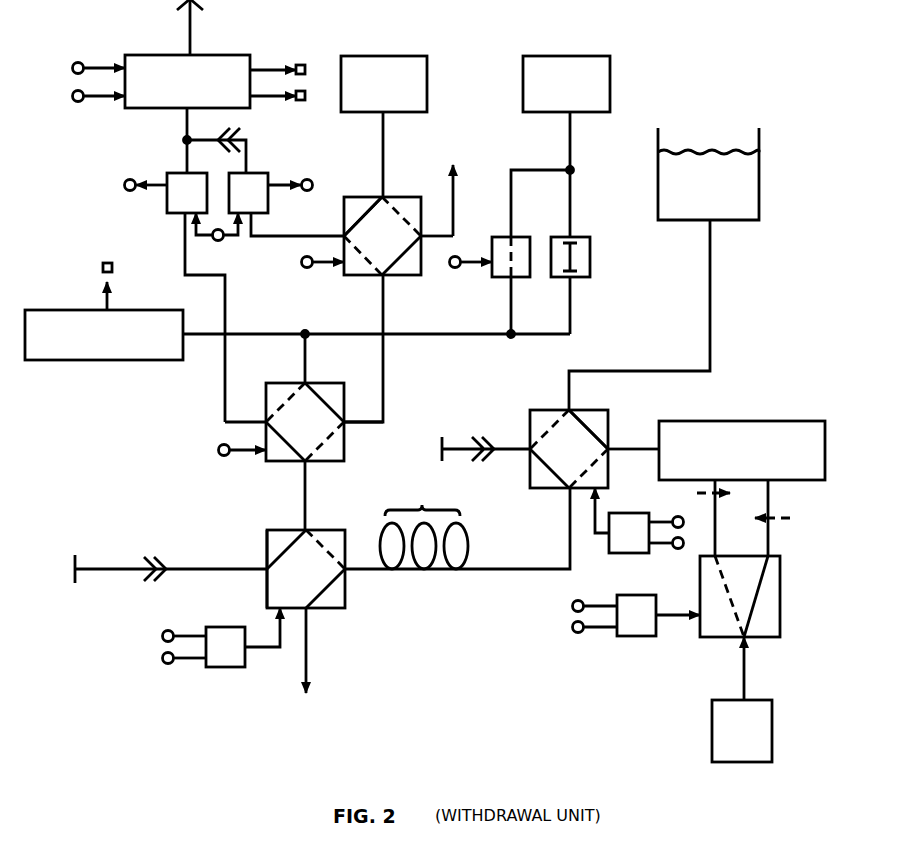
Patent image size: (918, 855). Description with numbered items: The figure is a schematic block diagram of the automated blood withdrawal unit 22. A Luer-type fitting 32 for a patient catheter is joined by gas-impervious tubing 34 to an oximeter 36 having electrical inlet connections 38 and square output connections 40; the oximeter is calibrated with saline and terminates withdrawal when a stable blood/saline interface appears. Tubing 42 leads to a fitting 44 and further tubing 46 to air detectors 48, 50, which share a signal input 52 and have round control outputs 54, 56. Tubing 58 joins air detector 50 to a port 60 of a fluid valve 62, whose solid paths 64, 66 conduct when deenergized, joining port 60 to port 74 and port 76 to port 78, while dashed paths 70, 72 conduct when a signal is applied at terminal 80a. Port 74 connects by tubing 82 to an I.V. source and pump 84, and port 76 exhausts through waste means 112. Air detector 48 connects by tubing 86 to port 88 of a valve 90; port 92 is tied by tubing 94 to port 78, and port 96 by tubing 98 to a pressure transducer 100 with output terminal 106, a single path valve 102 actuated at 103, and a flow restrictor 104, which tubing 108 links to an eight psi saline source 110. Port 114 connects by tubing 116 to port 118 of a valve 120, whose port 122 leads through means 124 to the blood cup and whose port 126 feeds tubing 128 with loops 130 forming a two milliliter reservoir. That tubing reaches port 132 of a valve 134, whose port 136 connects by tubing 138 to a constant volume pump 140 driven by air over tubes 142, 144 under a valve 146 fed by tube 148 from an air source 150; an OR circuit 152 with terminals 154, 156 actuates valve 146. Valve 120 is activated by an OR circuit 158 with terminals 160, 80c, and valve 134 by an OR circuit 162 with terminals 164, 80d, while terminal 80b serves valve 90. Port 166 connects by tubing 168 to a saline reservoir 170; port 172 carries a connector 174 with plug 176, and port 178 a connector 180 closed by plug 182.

The withdrawal unit 22 is at (212, 717).
The fitting 32 is at (209, 5).
The tubing 34 is at (190, 33).
The oximeter 36 is at (152, 55).
The electrical inlet connections 38 is at (72, 67).
The electrical output connections 40 is at (309, 50).
The tubing 42 is at (187, 140).
The fitting 44 is at (241, 134).
The tubing 46 is at (252, 161).
The air detector 48 is at (178, 173).
The air detector 50 is at (234, 173).
The electric signal input 52 is at (218, 241).
The signal output 54 is at (125, 185).
The signal output 56 is at (312, 180).
The tubing 58 is at (258, 236).
The port 60 is at (343, 246).
The fluid valve 62 is at (418, 197).
The fluid path 64 is at (357, 197).
The fluid path 66 is at (408, 276).
The flow path 70 is at (370, 255).
The flow path 72 is at (368, 218).
The port 74 is at (388, 197).
The port 76 is at (421, 240).
The port 78 is at (383, 290).
The terminal 80a is at (307, 268).
The terminal 80b is at (226, 456).
The terminal 80c is at (162, 658).
The terminal 80d is at (678, 549).
The tubing 82 is at (383, 144).
The I.V. source and pump apparatus 84 is at (427, 88).
The tubing 86 is at (185, 261).
The port 88 is at (262, 431).
The valve 90 is at (266, 422).
The port 92 is at (346, 416).
The tubing 94 is at (383, 368).
The port 96 is at (300, 380).
The tubing 98 is at (305, 340).
The pressure transducer 100 is at (98, 360).
The single path valve 102 is at (503, 237).
The actuation point 103 is at (455, 270).
The flow restrictor 104 is at (590, 258).
The output terminal 106 is at (104, 263).
The tubing 108 is at (566, 196).
The saline solution source 110 is at (610, 100).
The waste means 112 is at (455, 200).
The port 114 is at (305, 468).
The tubing 116 is at (308, 526).
The port 118 is at (290, 526).
The valve 120 is at (267, 552).
The port 122 is at (322, 612).
The means leading to blood cup 124 is at (307, 655).
The port 126 is at (360, 575).
The tubing 128 is at (398, 575).
The loops 130 is at (466, 532).
The port 132 is at (548, 492).
The valve 134 is at (541, 412).
The port 136 is at (612, 456).
The tubing 138 is at (633, 449).
The constant volume pump 140 is at (732, 421).
The tube 142 is at (717, 531).
The tube 144 is at (771, 536).
The valve 146 is at (780, 593).
The tube 148 is at (744, 679).
The air source 150 is at (712, 728).
The OR circuit 152 is at (626, 637).
The terminal 154 is at (566, 627).
The terminal 156 is at (566, 606).
The OR circuit 158 is at (215, 667).
The terminal 160 is at (162, 636).
The OR circuit 162 is at (612, 513).
The terminal 164 is at (684, 508).
The port 166 is at (575, 405).
The tubing 168 is at (640, 371).
The saline reservoir 170 is at (760, 186).
The port 172 is at (522, 452).
The connector 174 is at (478, 436).
The plug 176 is at (436, 449).
The port 178 is at (262, 573).
The connector 180 is at (153, 560).
The plug 182 is at (72, 576).